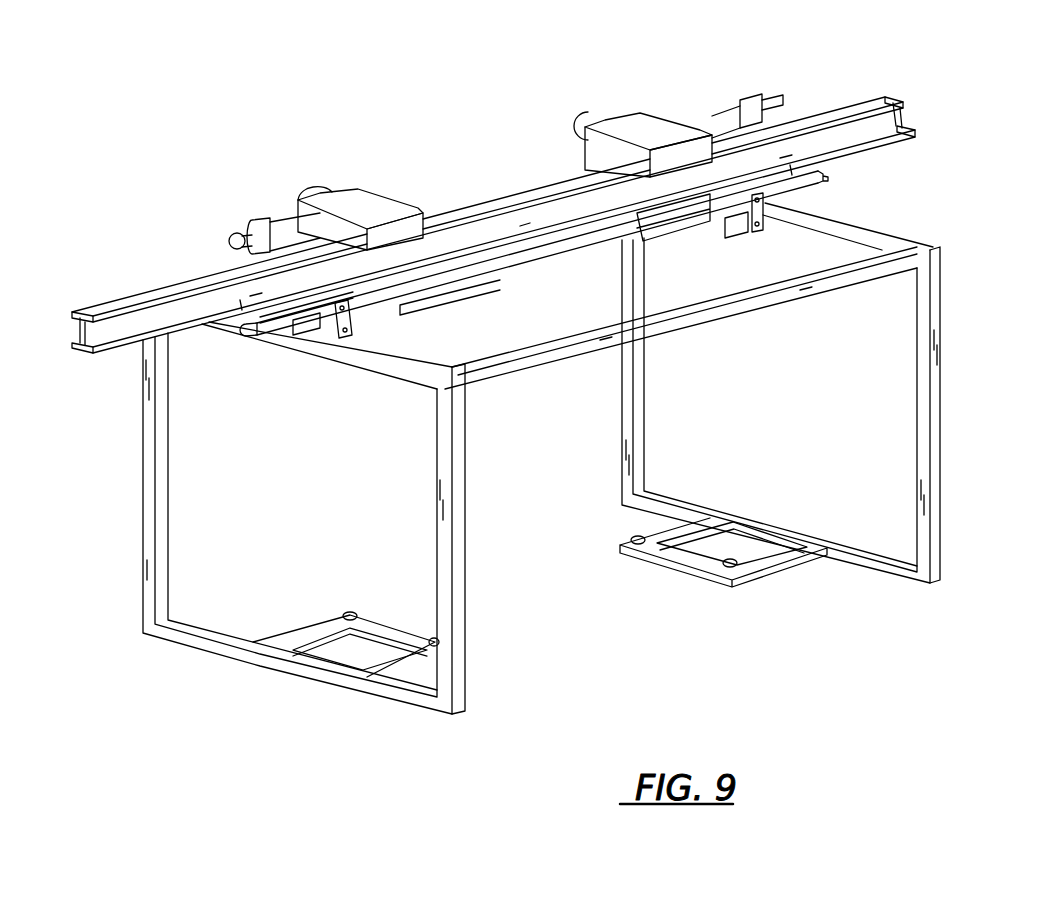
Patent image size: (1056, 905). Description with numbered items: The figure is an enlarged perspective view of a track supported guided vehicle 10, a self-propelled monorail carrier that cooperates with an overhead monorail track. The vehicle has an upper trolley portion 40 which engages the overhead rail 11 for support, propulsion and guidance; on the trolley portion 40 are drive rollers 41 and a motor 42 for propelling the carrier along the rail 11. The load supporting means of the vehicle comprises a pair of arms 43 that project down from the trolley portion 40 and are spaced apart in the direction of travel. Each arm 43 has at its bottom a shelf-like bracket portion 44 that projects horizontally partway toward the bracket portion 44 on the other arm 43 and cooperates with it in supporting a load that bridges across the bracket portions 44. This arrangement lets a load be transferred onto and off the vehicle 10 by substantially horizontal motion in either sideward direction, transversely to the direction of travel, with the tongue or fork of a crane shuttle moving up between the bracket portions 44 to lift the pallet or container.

The guided vehicle 10 is at (565, 458).
The overhead rail 11 is at (882, 93).
The upper trolley portion 40 is at (528, 204).
The drive rollers 41 is at (374, 207).
The motor 42 is at (302, 200).
The arms 43 is at (942, 368).
The shelf-like bracket portion 44 is at (374, 628).